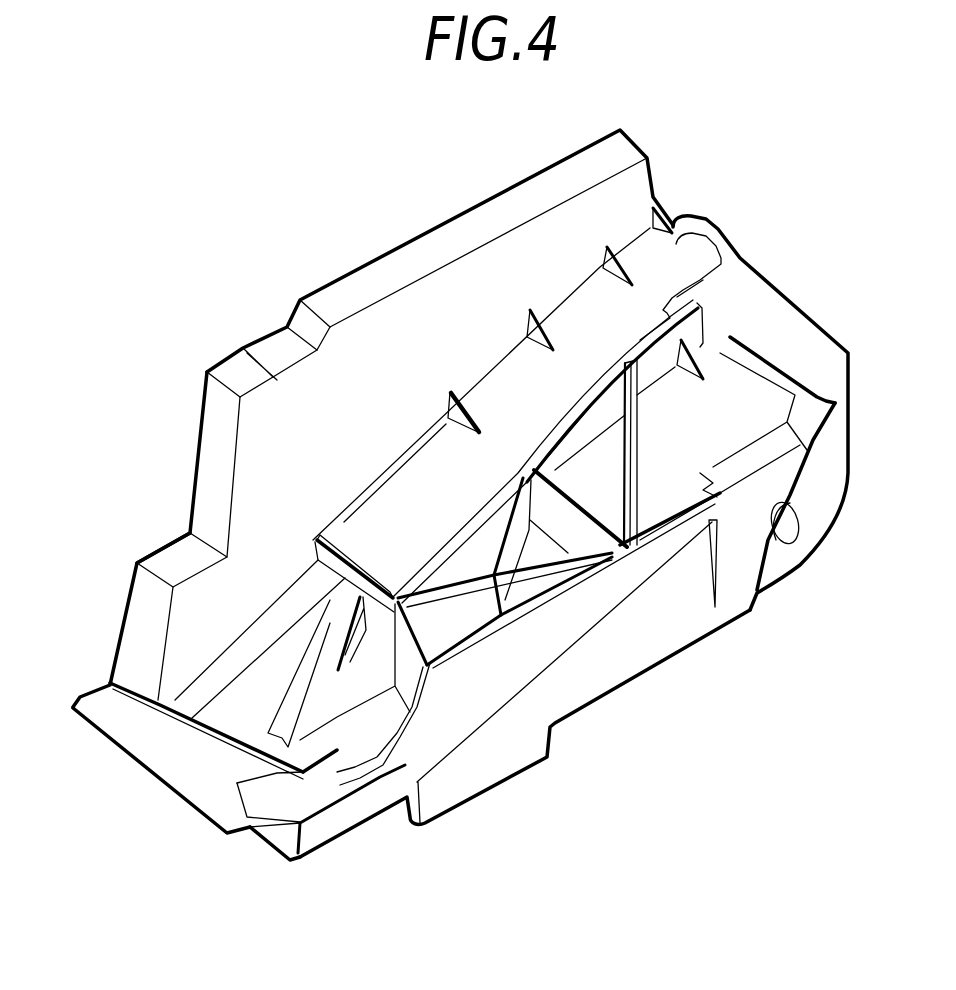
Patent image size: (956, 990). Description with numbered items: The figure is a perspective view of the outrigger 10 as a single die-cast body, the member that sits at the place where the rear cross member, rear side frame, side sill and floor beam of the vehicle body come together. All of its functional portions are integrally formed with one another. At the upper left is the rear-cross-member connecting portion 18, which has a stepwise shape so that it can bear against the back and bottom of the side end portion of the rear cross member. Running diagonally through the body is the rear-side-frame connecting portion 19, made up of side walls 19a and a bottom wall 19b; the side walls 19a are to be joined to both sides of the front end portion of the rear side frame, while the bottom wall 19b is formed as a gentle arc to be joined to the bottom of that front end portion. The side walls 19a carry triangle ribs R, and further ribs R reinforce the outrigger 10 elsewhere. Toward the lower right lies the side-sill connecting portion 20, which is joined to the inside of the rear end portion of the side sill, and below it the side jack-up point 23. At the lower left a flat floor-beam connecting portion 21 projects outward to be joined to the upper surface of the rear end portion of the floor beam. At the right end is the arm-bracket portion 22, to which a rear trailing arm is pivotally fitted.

The outrigger 10 is at (460, 457).
The rear-cross-member connecting portion 18 is at (167, 562).
The rear-side-frame connecting portion 19 is at (410, 493).
The side walls 19a is at (457, 540).
The bottom wall 19b is at (505, 450).
The side-sill connecting portion 20 is at (547, 647).
The floor-beam connecting portion 21 is at (168, 752).
The arm-bracket portion 22 is at (824, 538).
The side jack-up point 23 is at (457, 797).
The ribs R is at (460, 390).